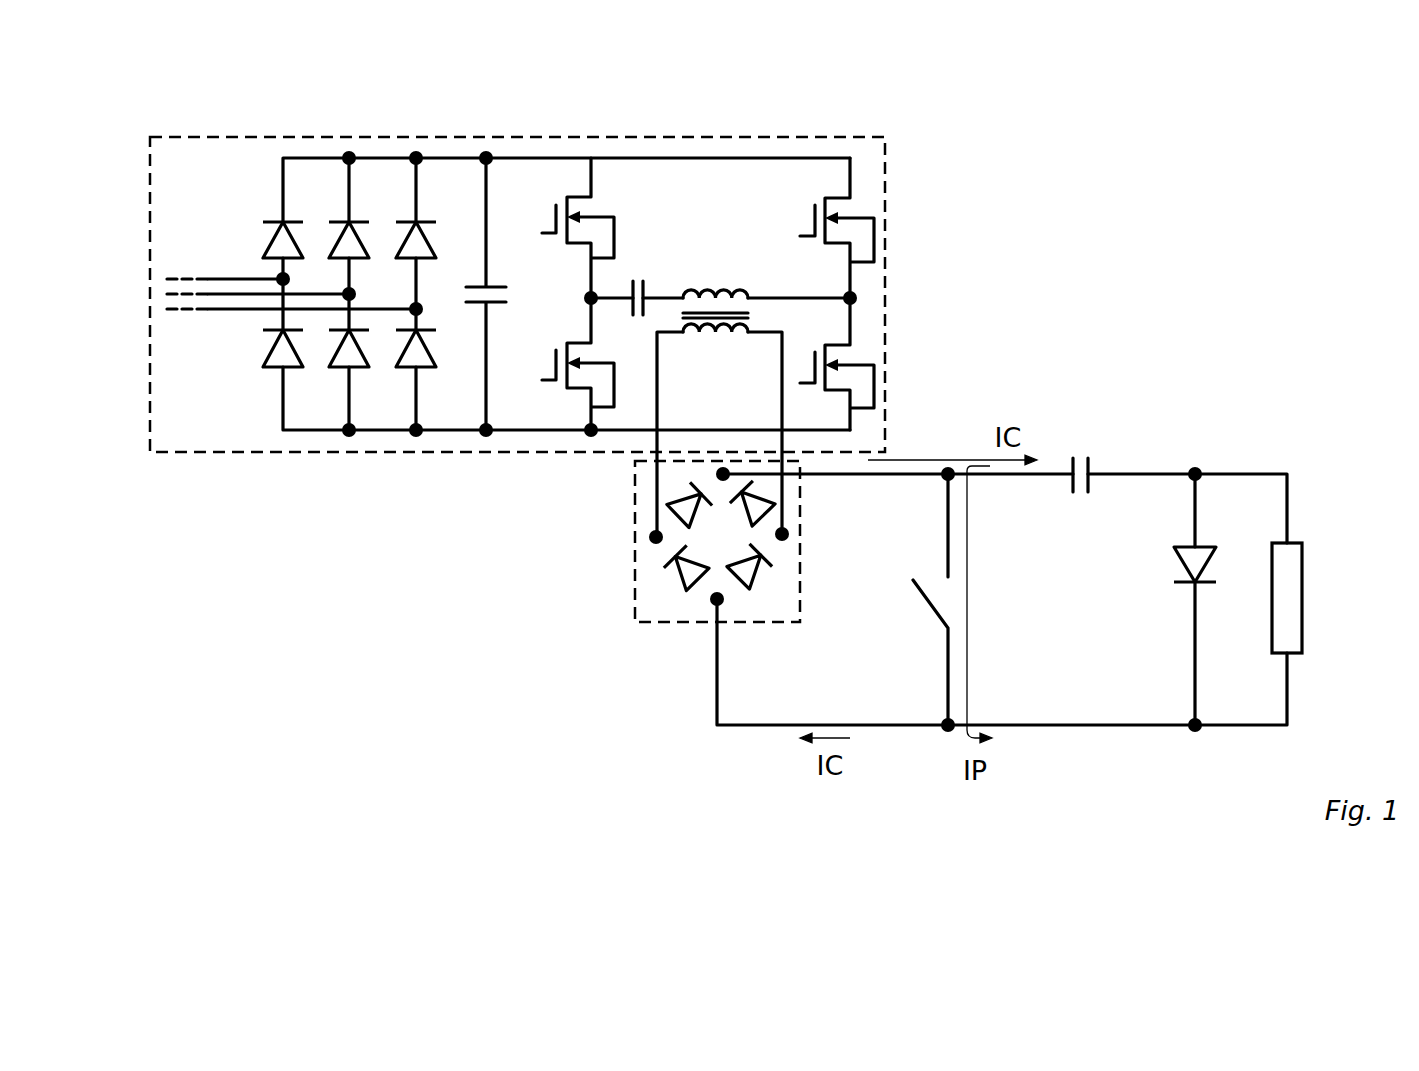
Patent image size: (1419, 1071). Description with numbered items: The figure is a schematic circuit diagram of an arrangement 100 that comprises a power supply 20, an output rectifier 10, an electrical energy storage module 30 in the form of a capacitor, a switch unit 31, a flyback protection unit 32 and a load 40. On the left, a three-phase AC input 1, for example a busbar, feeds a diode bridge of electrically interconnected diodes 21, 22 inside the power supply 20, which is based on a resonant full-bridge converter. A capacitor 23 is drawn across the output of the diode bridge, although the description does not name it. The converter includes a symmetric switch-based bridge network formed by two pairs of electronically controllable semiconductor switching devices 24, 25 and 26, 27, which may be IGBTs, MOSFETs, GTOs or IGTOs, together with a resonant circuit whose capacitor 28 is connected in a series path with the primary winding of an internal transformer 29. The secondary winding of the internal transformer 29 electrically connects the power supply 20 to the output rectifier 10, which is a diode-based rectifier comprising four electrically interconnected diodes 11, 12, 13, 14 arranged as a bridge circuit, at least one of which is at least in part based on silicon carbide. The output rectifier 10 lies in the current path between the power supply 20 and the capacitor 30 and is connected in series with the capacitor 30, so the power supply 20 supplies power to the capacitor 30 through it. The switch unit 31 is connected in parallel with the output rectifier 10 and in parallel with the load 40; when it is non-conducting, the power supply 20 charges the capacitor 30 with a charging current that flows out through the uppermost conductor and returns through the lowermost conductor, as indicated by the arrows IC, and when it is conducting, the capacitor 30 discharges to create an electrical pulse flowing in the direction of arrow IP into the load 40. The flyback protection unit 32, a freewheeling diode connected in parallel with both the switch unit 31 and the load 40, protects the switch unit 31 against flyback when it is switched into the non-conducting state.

The arrangement 100 is at (1125, 175).
The three-phase AC input 1 is at (180, 260).
The power supply 20 is at (247, 453).
The diode 21 is at (255, 200).
The diode 22 is at (240, 360).
The DC link capacitor 23 is at (525, 285).
The semiconductor switching device 24 is at (545, 190).
The semiconductor switching device 25 is at (541, 336).
The semiconductor switching device 26 is at (872, 198).
The semiconductor switching device 27 is at (872, 345).
The capacitor 28 is at (658, 265).
The internal transformer 29 is at (728, 280).
The output rectifier 10 is at (635, 482).
The diode 11 is at (662, 593).
The diode 12 is at (657, 515).
The diode 13 is at (786, 509).
The diode 14 is at (790, 576).
The electrical energy storage module 30 is at (1100, 437).
The switch unit 31 is at (922, 555).
The flyback protection unit 32 is at (1155, 570).
The load 40 is at (1302, 575).